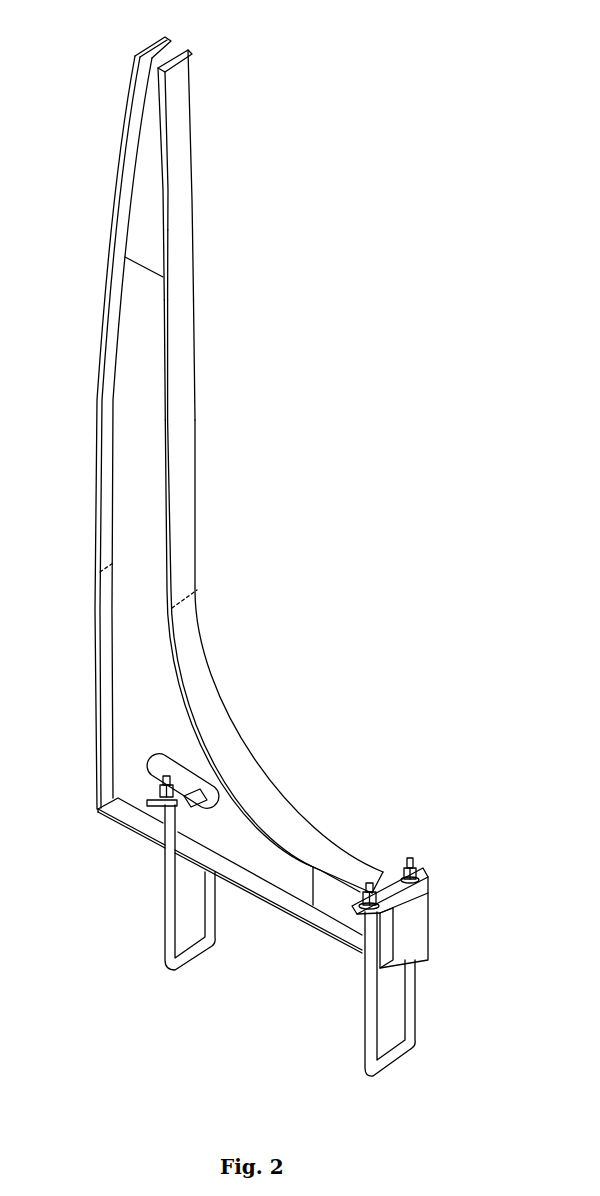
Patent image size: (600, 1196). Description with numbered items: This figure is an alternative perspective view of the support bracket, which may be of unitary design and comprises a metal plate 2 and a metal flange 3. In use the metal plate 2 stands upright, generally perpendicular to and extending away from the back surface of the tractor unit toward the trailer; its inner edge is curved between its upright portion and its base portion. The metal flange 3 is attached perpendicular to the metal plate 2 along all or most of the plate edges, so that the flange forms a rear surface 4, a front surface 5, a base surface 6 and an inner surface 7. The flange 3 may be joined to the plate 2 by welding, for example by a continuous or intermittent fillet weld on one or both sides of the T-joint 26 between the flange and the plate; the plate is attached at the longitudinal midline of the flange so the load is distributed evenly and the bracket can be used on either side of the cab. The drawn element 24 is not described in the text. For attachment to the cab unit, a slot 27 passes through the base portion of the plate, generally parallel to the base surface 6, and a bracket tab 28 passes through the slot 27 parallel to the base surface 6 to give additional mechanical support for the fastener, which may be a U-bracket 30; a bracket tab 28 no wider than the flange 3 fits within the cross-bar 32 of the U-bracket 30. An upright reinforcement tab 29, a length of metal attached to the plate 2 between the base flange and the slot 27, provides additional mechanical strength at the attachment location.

The metal plate 2 is at (147, 353).
The metal flange 3 is at (182, 276).
The rear surface 4 is at (112, 308).
The front surface 5 is at (422, 930).
The base surface 6 is at (270, 900).
The inner surface 7 is at (182, 473).
The upright strip 24 is at (183, 220).
The T-joint 26 is at (172, 56).
The slot 27 is at (170, 773).
The bracket tab 28 is at (198, 793).
The reinforcement tab 29 is at (185, 828).
The U-bracket 30 is at (418, 1030).
The cross-bar 32 is at (420, 878).